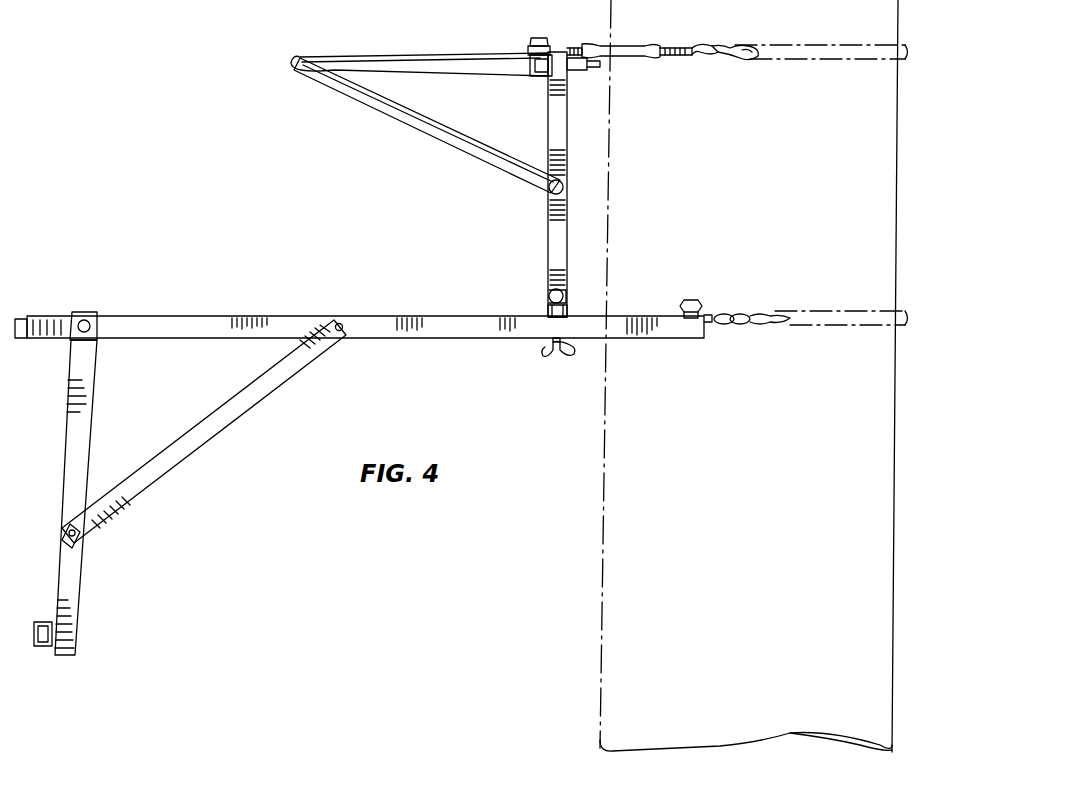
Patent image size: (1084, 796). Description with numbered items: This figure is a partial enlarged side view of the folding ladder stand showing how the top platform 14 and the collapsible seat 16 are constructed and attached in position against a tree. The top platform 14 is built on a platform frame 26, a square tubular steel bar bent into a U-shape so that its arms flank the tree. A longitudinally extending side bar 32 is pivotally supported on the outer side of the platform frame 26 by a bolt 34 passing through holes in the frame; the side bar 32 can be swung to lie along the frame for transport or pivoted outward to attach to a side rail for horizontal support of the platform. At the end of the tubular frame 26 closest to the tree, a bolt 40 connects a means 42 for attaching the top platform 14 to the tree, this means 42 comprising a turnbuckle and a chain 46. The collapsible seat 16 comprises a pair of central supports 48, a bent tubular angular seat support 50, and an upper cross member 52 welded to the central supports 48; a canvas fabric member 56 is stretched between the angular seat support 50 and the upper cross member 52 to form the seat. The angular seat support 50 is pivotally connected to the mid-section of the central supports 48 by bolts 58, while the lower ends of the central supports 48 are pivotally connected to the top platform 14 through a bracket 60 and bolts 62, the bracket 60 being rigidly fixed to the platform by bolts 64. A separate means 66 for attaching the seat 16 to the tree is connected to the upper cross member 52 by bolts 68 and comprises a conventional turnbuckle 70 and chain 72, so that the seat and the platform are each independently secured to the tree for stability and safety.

The top platform 14 is at (190, 272).
The collapsible seat 16 is at (358, 113).
The platform frame 26 is at (397, 339).
The side bar 32 is at (215, 430).
The bolt 34 is at (341, 318).
The bolt 40 is at (700, 298).
The means for attaching top platform to tree 42 is at (862, 330).
The chain 46 is at (822, 308).
The central support 48 is at (548, 220).
The angular seat support 50 is at (442, 128).
The upper cross member 52 is at (549, 54).
The fabric member 56 is at (403, 56).
The bolt 58 is at (566, 186).
The bracket 60 is at (548, 294).
The bolt 62 is at (560, 298).
The bolt 64 is at (567, 314).
The means for attaching seat to tree 66 is at (732, 72).
The bolt 68 is at (530, 44).
The turnbuckle 70 is at (622, 46).
The chain 72 is at (797, 44).